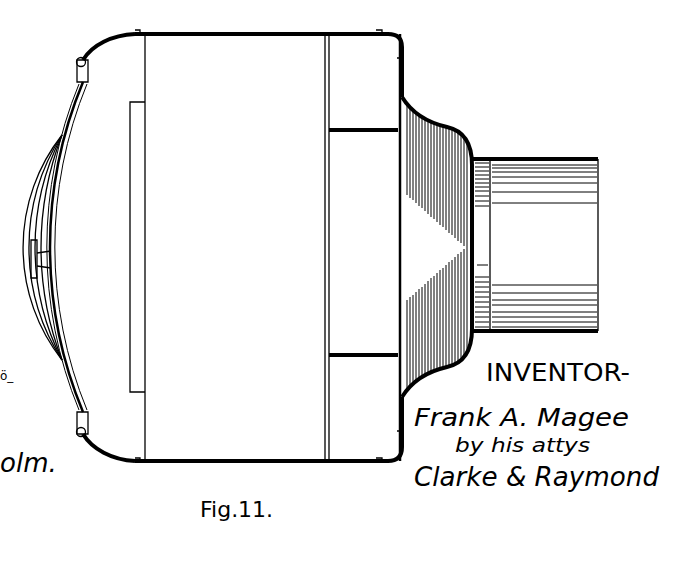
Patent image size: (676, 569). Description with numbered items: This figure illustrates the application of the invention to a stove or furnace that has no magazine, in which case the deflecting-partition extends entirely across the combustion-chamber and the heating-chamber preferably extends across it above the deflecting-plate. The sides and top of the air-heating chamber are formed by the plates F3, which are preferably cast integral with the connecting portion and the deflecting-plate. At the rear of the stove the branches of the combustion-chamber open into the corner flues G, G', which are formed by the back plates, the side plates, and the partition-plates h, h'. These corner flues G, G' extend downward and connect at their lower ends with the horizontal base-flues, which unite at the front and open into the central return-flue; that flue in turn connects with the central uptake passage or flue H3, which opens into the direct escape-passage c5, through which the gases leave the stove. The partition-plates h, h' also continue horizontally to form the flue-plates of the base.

The plates F3 is at (185, 247).
The corner flue G' is at (364, 82).
The partition-plate h' is at (364, 144).
The central uptake passage or flue H3 is at (364, 242).
The direct escape-passage c5 is at (437, 247).
The partition-plate h is at (364, 345).
The corner flue G is at (364, 408).